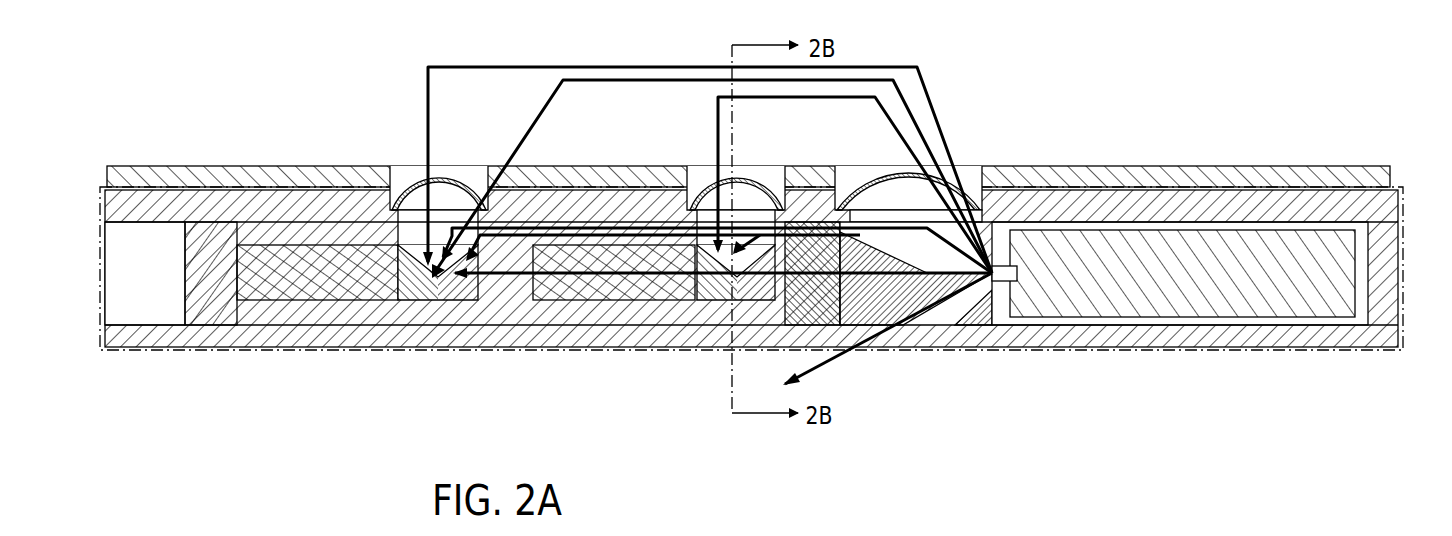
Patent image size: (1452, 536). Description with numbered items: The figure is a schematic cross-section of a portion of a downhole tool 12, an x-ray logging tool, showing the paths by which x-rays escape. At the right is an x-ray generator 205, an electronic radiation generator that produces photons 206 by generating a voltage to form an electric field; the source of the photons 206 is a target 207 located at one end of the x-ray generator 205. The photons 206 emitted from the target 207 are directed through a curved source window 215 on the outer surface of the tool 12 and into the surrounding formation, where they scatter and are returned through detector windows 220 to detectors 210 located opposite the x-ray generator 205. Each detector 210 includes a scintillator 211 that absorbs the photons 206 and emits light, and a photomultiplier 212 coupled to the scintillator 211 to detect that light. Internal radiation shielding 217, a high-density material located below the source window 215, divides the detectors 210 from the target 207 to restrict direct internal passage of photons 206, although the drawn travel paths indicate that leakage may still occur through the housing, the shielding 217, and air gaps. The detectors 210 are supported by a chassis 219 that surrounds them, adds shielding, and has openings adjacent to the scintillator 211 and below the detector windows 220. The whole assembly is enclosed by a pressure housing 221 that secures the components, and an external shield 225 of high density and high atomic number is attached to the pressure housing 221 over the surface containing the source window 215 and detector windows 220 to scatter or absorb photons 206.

The downhole tool 12 is at (1265, 131).
The x-ray generator 205 is at (1165, 305).
The photons 206 is at (952, 302).
The target 207 is at (1005, 282).
The detectors 210 is at (506, 373).
The scintillator 211 is at (586, 319).
The photomultiplier 212 is at (300, 298).
The source window 215 is at (975, 168).
The internal radiation shielding 217 is at (820, 308).
The chassis 219 is at (208, 250).
The detector windows 220 is at (462, 174).
The pressure housing 221 is at (1383, 335).
The external shield 225 is at (280, 175).